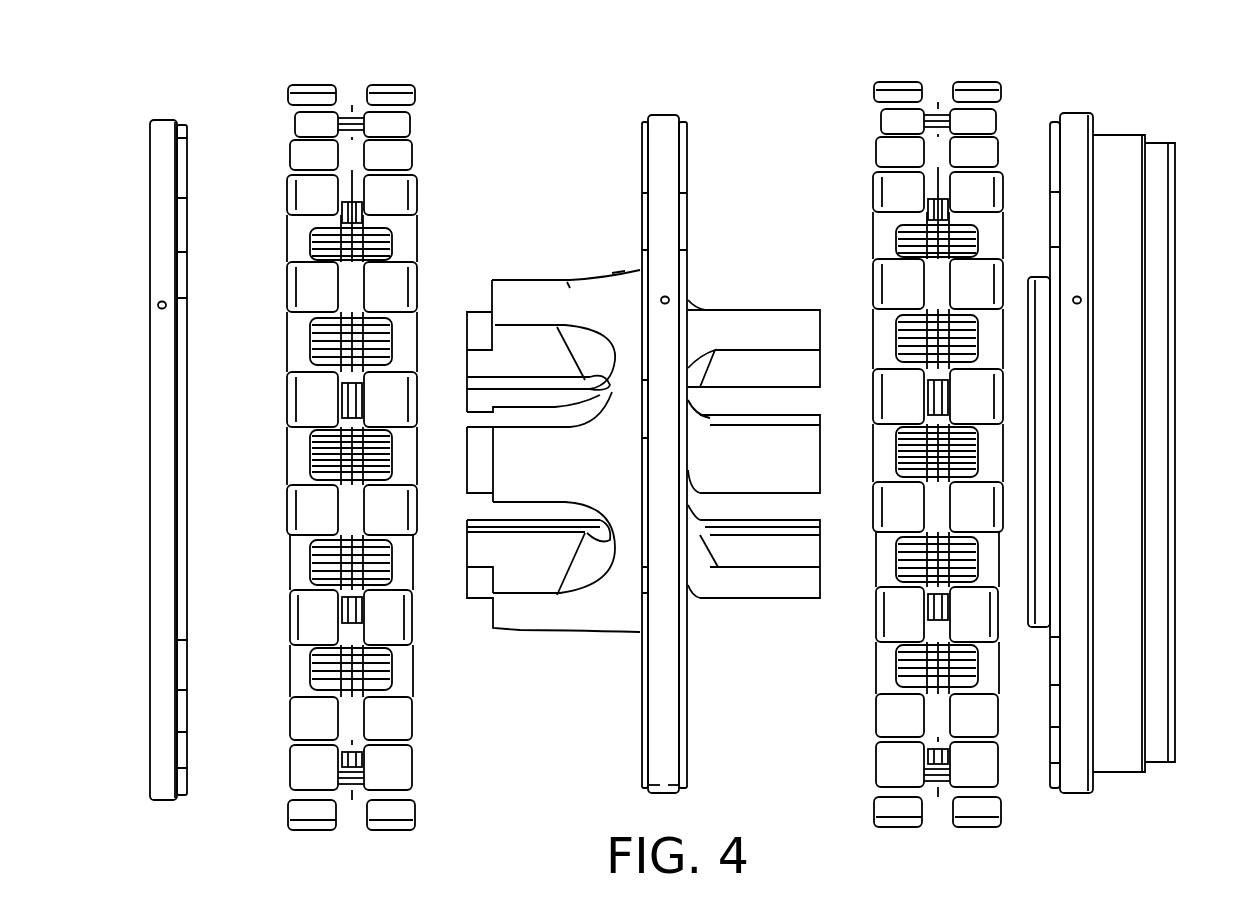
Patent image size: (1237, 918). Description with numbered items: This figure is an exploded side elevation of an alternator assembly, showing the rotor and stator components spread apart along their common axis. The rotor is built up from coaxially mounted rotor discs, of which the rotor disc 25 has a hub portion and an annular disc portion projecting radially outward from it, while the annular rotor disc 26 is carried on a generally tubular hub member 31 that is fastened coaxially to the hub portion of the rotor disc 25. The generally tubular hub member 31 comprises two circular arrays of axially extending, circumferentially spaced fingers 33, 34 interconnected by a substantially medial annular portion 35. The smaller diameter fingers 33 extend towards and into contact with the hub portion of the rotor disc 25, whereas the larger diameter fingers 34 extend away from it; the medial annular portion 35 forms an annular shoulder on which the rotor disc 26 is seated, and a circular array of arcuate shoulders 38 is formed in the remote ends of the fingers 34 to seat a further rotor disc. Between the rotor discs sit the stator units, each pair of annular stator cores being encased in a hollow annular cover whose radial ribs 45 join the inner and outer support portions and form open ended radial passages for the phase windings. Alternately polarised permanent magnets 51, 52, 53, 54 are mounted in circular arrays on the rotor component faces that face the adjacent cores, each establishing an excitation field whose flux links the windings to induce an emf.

The rotor disc 25 is at (1122, 470).
The rotor disc 26 is at (664, 115).
The generally tubular hub member 31 is at (568, 272).
The axially extending circumferentially spaced fingers 33 is at (788, 310).
The axially extending circumferentially spaced fingers 34 is at (504, 280).
The substantially medial annular portion 35 is at (622, 272).
The arcuate shoulders 38 is at (481, 312).
The radial ribs 45 is at (286, 133).
The permanent magnet 51 is at (1050, 142).
The permanent magnet 52 is at (688, 776).
The permanent magnet 53 is at (642, 776).
The permanent magnet 54 is at (189, 300).